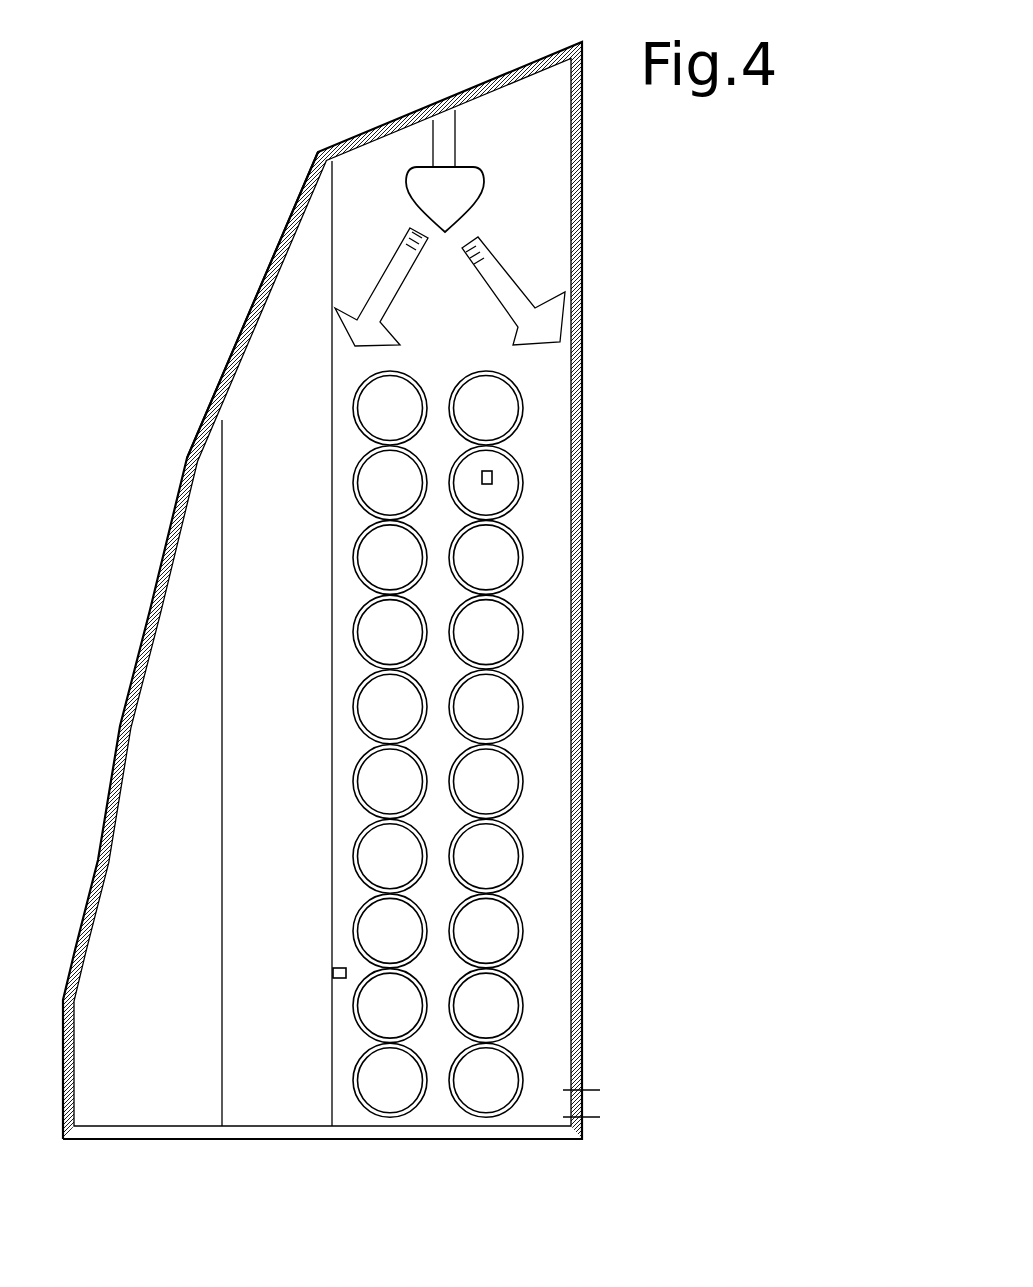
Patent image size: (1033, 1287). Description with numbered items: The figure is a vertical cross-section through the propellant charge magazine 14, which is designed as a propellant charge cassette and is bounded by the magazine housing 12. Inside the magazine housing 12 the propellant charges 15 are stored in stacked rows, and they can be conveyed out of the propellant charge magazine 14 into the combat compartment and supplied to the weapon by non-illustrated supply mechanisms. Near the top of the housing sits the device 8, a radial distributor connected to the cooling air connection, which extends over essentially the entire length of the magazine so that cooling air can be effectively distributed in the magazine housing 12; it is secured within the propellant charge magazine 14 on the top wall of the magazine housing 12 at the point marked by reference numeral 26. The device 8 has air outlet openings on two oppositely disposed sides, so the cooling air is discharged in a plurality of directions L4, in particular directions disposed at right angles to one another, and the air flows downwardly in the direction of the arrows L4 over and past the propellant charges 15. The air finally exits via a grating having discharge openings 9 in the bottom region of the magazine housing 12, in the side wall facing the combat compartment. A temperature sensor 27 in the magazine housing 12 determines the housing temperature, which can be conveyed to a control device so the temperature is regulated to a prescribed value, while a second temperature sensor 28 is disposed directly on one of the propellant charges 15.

The device 8 is at (430, 192).
The securing point on the top wall 26 is at (447, 137).
The magazine housing 12 is at (310, 265).
The propellant charge magazine 14 is at (690, 264).
The propellant charges 15 is at (517, 492).
The temperature sensor 28 is at (492, 471).
The temperature sensor 27 is at (331, 968).
The discharge openings 9 is at (588, 1102).
The directions of cooling air flow L4 is at (483, 288).